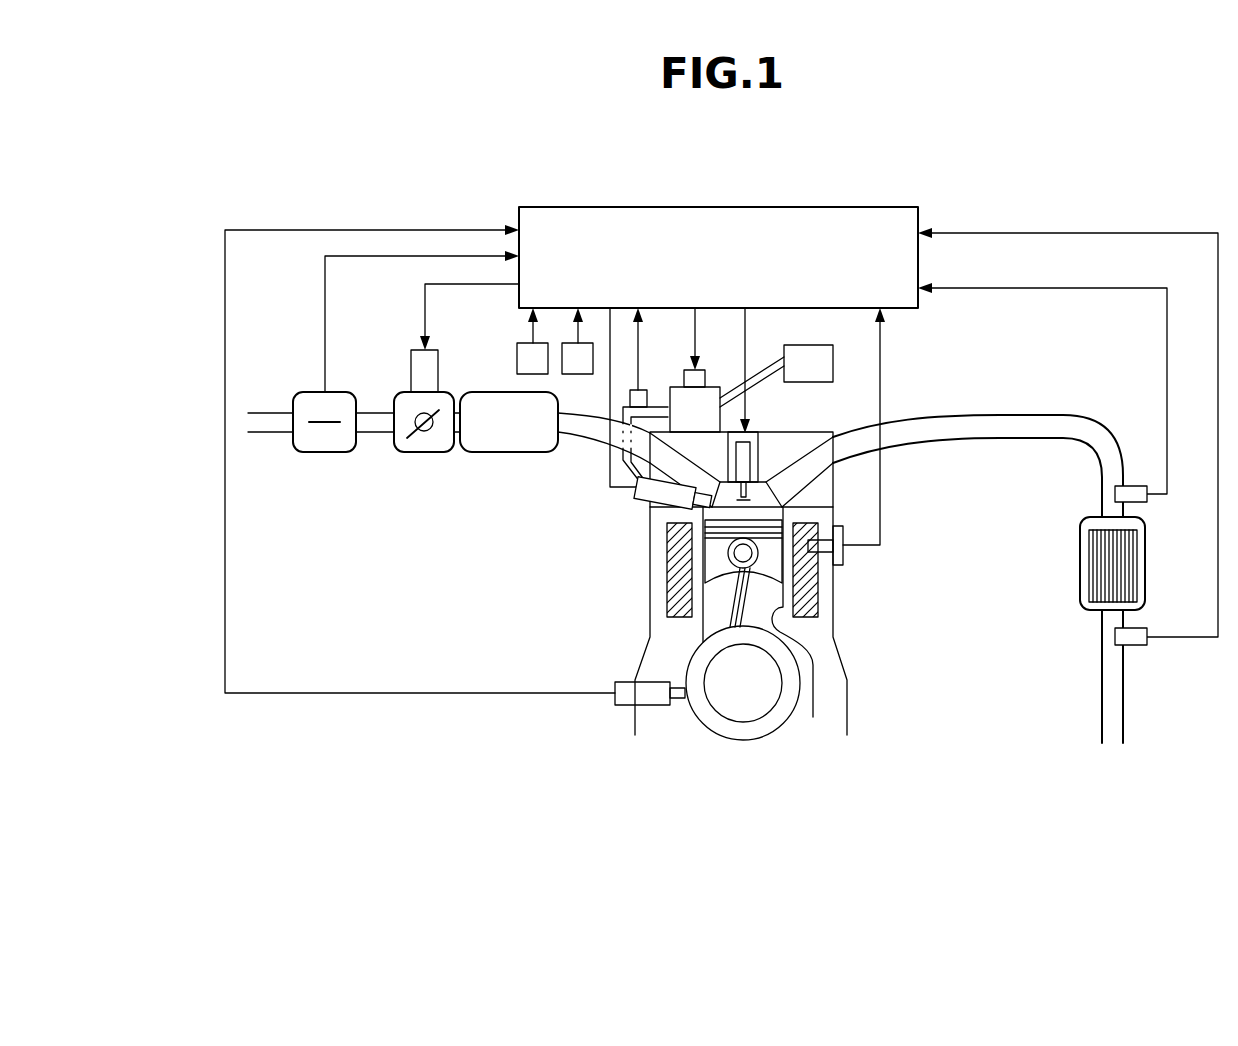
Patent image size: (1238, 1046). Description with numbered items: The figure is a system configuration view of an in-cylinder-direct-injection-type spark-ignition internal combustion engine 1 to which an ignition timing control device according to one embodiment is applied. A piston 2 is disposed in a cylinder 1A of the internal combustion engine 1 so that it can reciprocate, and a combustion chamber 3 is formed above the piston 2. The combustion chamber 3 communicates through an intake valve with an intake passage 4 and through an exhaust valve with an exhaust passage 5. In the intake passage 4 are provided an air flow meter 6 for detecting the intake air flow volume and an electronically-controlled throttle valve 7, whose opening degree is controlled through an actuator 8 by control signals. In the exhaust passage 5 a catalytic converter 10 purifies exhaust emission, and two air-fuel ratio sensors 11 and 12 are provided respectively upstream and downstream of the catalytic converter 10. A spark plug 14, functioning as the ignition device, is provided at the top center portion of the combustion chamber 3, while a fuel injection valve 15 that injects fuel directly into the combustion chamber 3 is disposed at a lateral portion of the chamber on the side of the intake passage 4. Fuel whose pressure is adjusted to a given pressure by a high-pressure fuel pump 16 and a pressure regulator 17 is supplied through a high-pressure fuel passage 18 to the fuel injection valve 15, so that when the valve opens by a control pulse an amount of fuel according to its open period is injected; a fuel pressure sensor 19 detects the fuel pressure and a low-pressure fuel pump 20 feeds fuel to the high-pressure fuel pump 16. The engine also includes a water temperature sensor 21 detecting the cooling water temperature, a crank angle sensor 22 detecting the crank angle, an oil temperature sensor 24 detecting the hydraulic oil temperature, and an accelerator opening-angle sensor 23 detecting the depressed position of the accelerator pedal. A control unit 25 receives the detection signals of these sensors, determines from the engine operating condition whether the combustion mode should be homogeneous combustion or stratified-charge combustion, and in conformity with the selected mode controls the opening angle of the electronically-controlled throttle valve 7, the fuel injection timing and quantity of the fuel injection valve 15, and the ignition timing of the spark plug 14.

The internal combustion engine 1 is at (628, 581).
The cylinder 1A is at (830, 642).
The piston 2 is at (770, 565).
The combustion chamber 3 is at (765, 498).
The intake passage 4 is at (263, 436).
The exhaust passage 5 is at (988, 415).
The air flow meter 6 is at (330, 454).
The electronically-controlled throttle valve 7 is at (418, 437).
The actuator 8 is at (411, 365).
The catalytic converter 10 is at (1080, 548).
The air-fuel ratio sensor 11 is at (1140, 503).
The air-fuel ratio sensor 12 is at (1140, 648).
The spark plug 14 is at (758, 462).
The fuel injection valve 15 is at (643, 502).
The high-pressure fuel pump 16 is at (718, 387).
The pressure regulator 17 is at (692, 368).
The high-pressure fuel passage 18 is at (627, 478).
The fuel pressure sensor 19 is at (642, 390).
The low-pressure fuel pump 20 is at (833, 365).
The water temperature sensor 21 is at (843, 555).
The crank angle sensor 22 is at (620, 682).
The accelerator opening-angle sensor 23 is at (517, 352).
The oil temperature sensor 24 is at (578, 374).
The control unit 25 is at (865, 207).